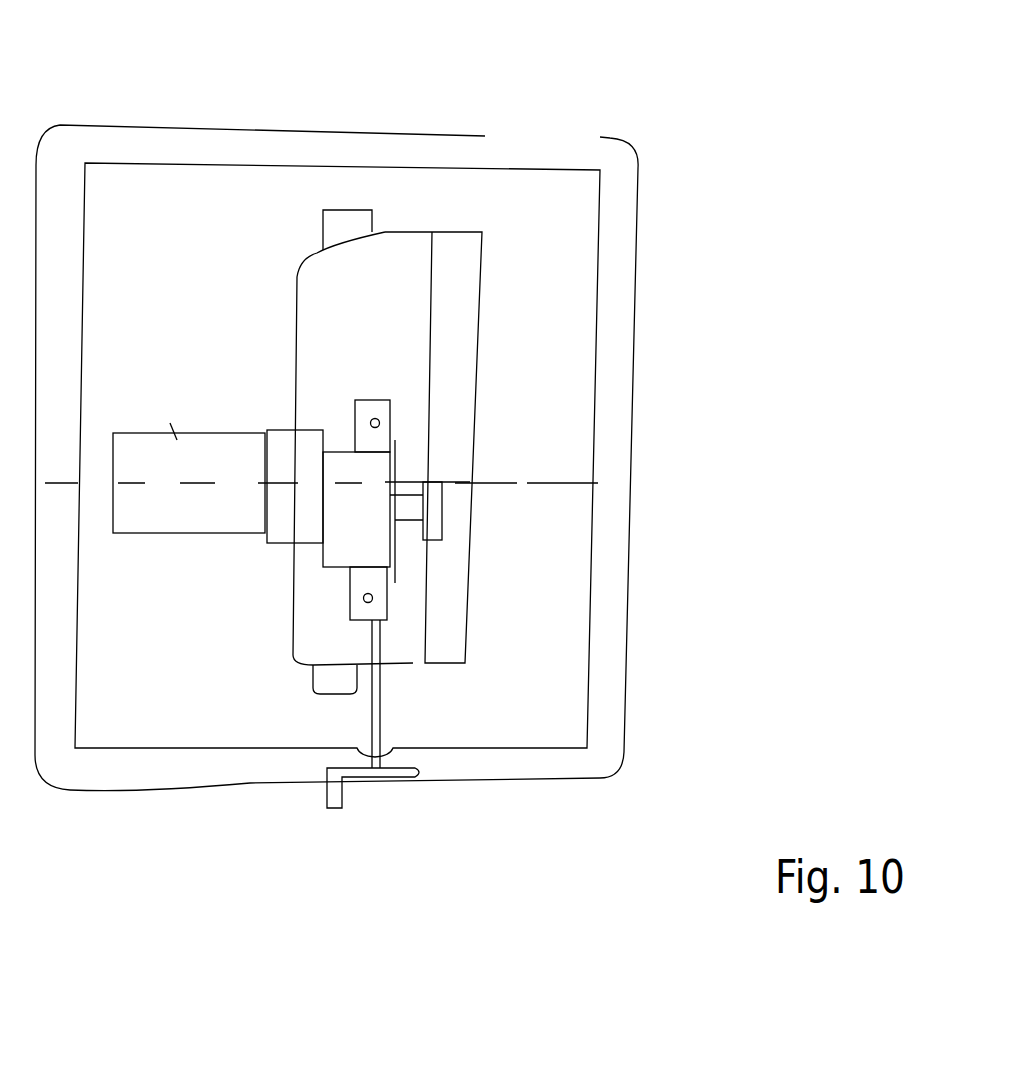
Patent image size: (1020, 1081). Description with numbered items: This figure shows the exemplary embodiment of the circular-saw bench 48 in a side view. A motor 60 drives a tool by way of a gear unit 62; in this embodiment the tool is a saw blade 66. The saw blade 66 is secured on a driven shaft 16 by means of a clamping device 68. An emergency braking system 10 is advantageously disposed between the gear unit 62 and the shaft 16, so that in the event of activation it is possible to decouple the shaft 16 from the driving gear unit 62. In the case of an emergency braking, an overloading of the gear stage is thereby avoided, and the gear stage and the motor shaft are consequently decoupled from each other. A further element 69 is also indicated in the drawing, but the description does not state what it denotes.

The circular-saw bench 48 is at (563, 142).
The emergency braking system 10 is at (347, 450).
The driven shaft 16 is at (418, 500).
The saw blade 66 is at (423, 742).
The clamping device 68 is at (442, 520).
The motor 60 is at (162, 500).
The gear unit 62 is at (283, 518).
The mounting plate 69 is at (522, 698).